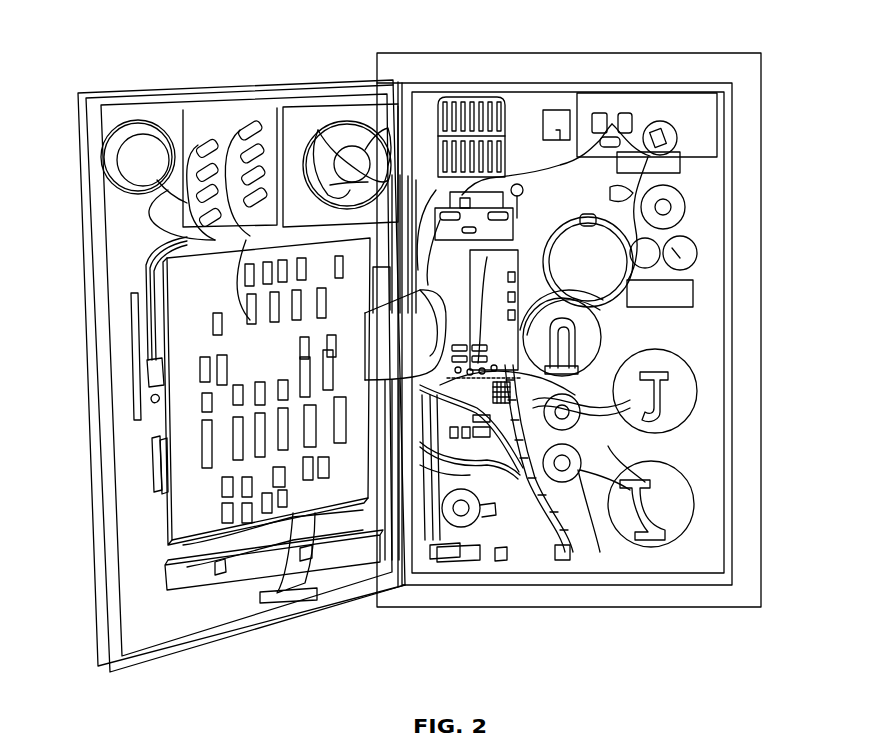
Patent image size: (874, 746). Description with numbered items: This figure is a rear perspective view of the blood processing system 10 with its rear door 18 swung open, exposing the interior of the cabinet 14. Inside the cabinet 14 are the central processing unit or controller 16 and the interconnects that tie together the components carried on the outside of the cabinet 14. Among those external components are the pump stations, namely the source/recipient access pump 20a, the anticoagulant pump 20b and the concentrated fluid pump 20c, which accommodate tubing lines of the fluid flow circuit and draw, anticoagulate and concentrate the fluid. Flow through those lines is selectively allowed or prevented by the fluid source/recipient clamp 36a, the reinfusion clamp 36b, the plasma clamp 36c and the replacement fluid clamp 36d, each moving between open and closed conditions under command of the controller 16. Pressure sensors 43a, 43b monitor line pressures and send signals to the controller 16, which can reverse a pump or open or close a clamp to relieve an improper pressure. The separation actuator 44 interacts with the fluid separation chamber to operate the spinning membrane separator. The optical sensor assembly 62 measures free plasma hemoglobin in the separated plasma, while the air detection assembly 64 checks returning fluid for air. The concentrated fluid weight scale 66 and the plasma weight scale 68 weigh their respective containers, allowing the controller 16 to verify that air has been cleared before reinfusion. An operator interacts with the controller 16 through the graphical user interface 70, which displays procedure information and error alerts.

The blood processing system 10 is at (60, 585).
The cabinet 14 is at (740, 600).
The controller 16 is at (185, 380).
The rear door 18 is at (168, 650).
The source/recipient access pump 20a is at (677, 512).
The anticoagulant pump 20b is at (680, 405).
The concentrated fluid pump 20c is at (600, 358).
The fluid source/recipient clamp 36a is at (575, 420).
The reinfusion clamp 36b is at (575, 466).
The plasma clamp 36c is at (460, 528).
The replacement fluid clamp 36d is at (664, 202).
The pressure sensor 43a is at (688, 257).
The pressure sensor 43b is at (640, 242).
The separation actuator 44 is at (470, 108).
The optical sensor assembly 62 is at (476, 440).
The air detection assembly 64 is at (560, 500).
The concentrated fluid weight scale 66 is at (578, 470).
The plasma weight scale 68 is at (440, 560).
The graphical user interface 70 is at (707, 115).